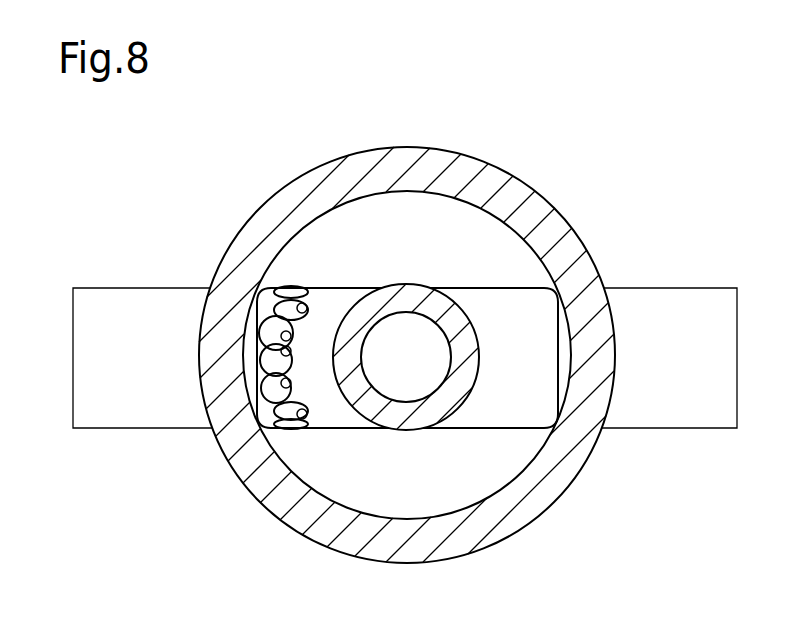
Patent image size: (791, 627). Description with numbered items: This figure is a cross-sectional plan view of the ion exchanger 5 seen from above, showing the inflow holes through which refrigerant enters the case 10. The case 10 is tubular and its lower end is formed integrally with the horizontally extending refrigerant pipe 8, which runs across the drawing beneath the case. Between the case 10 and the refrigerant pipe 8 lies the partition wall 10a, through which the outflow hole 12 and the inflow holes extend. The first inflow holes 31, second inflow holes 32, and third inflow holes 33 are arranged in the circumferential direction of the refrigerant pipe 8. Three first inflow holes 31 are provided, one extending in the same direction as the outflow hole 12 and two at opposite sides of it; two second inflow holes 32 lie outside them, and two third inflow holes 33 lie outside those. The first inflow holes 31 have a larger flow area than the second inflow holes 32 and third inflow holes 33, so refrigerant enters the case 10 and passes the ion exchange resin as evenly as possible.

The ion exchanger 5 is at (631, 135).
The refrigerant pipe 8 is at (139, 288).
The case 10 is at (287, 185).
The partition wall 10a is at (343, 428).
The outflow hole 12 is at (438, 364).
The first inflow holes 31 is at (288, 382).
The second inflow holes 32 is at (304, 305).
The third inflow holes 33 is at (292, 288).